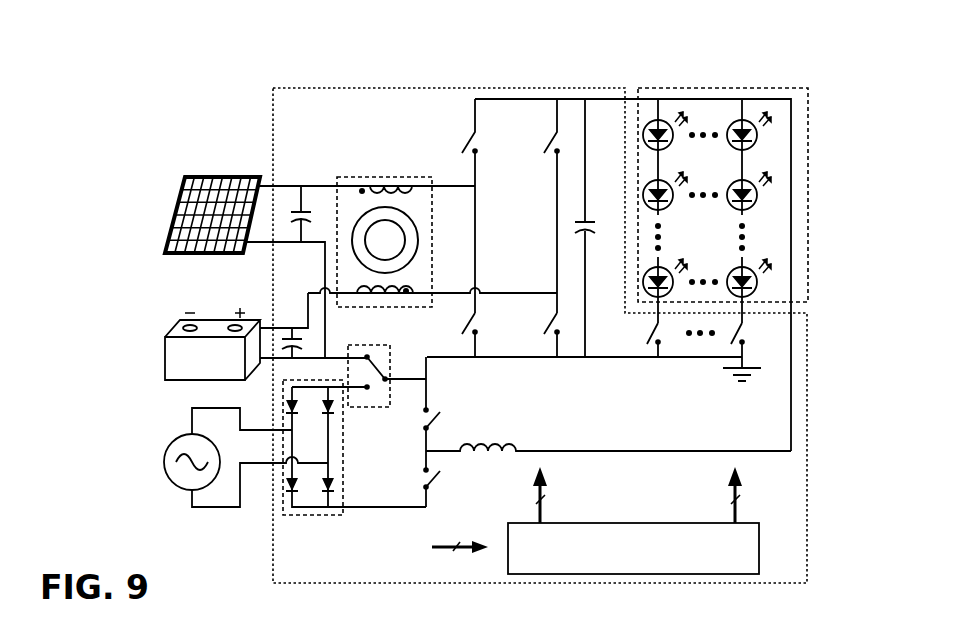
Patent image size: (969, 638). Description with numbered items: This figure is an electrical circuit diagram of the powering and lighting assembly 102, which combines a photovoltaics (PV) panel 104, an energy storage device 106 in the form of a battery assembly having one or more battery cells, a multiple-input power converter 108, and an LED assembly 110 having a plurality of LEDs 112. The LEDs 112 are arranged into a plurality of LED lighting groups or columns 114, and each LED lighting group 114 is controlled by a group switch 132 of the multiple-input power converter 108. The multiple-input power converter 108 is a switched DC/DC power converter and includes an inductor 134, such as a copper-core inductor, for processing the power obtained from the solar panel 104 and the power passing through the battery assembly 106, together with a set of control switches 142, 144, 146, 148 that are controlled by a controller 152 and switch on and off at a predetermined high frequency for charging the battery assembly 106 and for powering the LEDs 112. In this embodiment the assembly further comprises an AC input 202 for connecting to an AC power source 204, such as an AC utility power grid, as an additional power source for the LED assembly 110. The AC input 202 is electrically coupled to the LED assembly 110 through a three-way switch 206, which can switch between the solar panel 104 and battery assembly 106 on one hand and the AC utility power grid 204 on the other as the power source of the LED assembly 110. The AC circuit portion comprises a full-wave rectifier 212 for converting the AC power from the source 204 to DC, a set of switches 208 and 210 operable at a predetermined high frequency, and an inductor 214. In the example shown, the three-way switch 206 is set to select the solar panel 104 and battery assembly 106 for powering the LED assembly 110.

The powering and lighting assembly 102 is at (98, 136).
The photovoltaics (PV) panel 104 is at (183, 205).
The energy storage device 106 is at (165, 358).
The multiple-input power converter 108 is at (273, 128).
The LED assembly 110 is at (767, 169).
The LED 112 is at (757, 137).
The LED lighting group 114 is at (757, 169).
The group switch 132 is at (653, 331).
The inductor 134 is at (380, 176).
The control switch 142 is at (467, 141).
The control switch 144 is at (549, 141).
The control switch 146 is at (468, 322).
The control switch 148 is at (551, 322).
The controller 152 is at (759, 545).
The AC input 202 is at (254, 472).
The AC power source 204 is at (164, 460).
The three-way switch 206 is at (365, 407).
The switch 208 is at (440, 418).
The switch 210 is at (437, 483).
The full-wave rectifier 212 is at (354, 472).
The inductor 214 is at (518, 437).